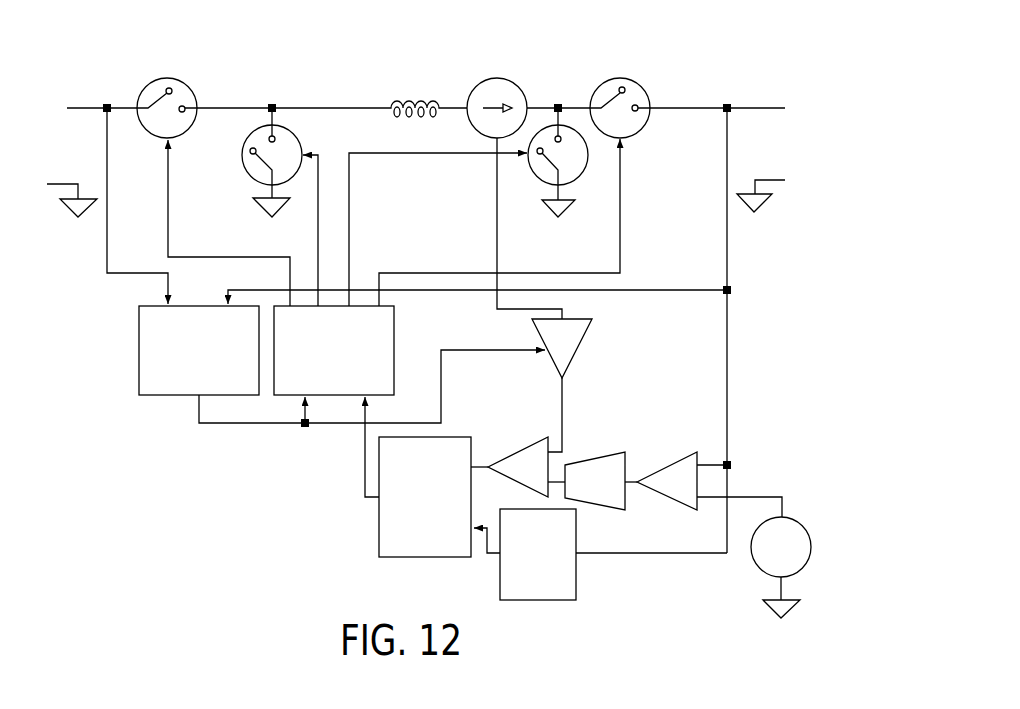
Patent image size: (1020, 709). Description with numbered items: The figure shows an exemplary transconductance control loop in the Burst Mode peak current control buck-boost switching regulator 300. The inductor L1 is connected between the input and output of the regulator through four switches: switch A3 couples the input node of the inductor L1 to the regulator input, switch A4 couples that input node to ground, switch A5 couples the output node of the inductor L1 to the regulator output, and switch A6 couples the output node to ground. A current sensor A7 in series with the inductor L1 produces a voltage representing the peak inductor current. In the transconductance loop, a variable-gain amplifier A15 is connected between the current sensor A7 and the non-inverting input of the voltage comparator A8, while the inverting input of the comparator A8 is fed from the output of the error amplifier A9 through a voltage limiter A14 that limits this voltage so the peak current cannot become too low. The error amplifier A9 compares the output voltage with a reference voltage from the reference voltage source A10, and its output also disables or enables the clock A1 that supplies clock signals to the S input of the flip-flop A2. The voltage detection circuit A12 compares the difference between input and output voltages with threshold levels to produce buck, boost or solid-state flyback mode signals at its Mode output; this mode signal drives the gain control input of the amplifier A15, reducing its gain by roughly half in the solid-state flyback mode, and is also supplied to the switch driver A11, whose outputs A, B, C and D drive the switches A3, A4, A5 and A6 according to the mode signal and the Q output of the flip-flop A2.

The switching regulator 300 is at (619, 56).
The switch A3 is at (213, 192).
The switch A4 is at (280, 209).
The inductor L1 is at (416, 97).
The current sensor A7 is at (514, 198).
The switch A5 is at (468, 209).
The switch A6 is at (514, 192).
The voltage detection circuit A12 is at (199, 350).
The switch driver A11 is at (334, 350).
The variable-gain amplifier A15 is at (562, 385).
The flip-flop A2 is at (433, 497).
The voltage comparator A8 is at (526, 467).
The voltage limiter A14 is at (601, 481).
The error amplifier A9 is at (709, 484).
The reference voltage source A10 is at (781, 567).
The clock A1 is at (600, 554).